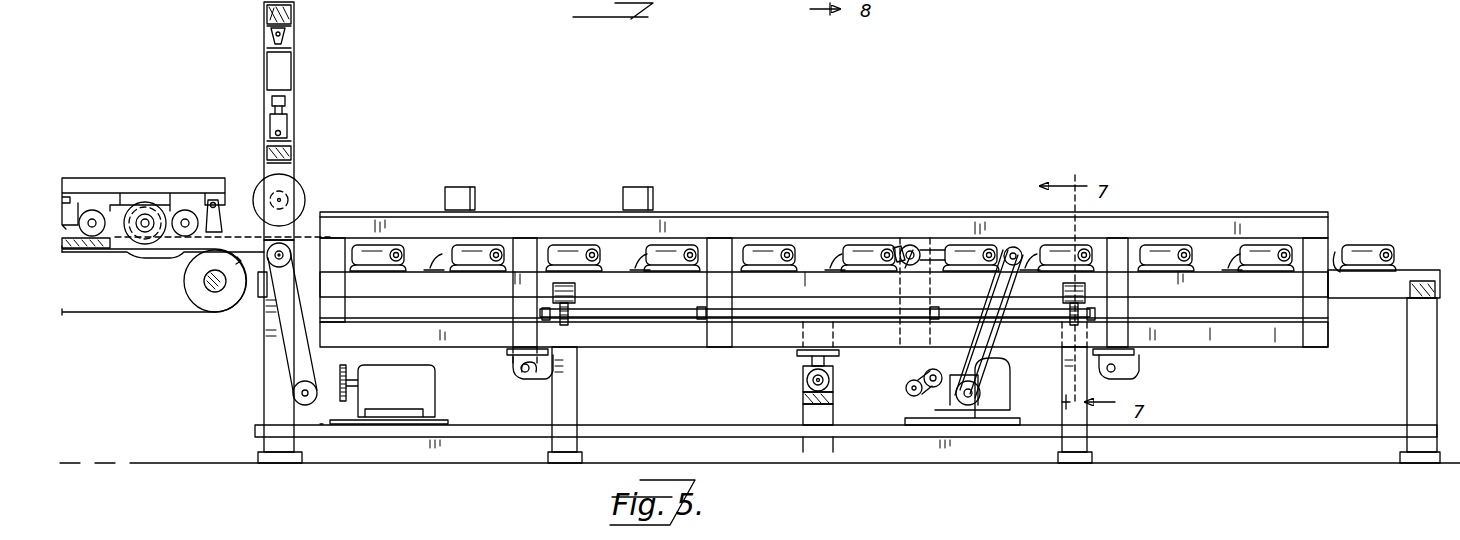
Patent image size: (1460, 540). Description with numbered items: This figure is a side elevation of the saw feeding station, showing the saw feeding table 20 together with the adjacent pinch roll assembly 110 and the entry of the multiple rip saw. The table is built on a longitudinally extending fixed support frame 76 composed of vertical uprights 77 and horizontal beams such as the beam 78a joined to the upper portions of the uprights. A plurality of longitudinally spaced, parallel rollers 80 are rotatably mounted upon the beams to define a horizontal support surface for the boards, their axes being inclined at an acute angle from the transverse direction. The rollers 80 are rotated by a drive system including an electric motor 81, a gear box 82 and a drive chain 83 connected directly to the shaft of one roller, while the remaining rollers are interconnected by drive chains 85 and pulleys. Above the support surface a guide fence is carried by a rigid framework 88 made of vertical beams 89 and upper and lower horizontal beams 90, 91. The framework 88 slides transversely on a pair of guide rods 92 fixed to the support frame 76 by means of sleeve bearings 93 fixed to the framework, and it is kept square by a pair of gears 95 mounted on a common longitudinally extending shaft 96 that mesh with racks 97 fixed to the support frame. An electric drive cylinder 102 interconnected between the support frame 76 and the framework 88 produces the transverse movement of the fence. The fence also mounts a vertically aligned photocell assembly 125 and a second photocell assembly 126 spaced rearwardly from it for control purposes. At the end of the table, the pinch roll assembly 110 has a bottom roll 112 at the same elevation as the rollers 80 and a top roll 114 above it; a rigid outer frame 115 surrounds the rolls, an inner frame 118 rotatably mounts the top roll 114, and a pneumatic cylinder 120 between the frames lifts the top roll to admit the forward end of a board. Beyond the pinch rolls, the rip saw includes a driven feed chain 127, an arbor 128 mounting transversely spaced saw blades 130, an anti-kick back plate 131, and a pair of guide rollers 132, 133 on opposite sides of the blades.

The saw feeding table 20 is at (1409, 240).
The fixed support frame 76 is at (1405, 354).
The vertical uprights 77 is at (264, 378).
The horizontal beam 78a is at (1397, 307).
The rollers 80 is at (380, 247).
The electric motor 81 is at (1005, 392).
The gear box 82 is at (925, 389).
The drive chain 83 is at (958, 342).
The drive chains 85 is at (917, 244).
The rigid framework 88 is at (1277, 212).
The vertical beams 89 is at (1305, 312).
The upper horizontal beam 90 is at (1210, 215).
The lower horizontal beam 91 is at (1260, 347).
The guide rods 92 is at (536, 380).
The sleeve bearings 93 is at (508, 360).
The gears 95 is at (572, 318).
The shaft 96 is at (676, 320).
The racks 97 is at (580, 300).
The electric drive cylinder 102 is at (799, 391).
The pinch roll assembly 110 is at (293, 108).
The bottom roll 112 is at (285, 247).
The top roll 114 is at (290, 187).
The rigid outer frame 115 is at (293, 8).
The inner frame 118 is at (292, 153).
The pneumatic cylinder 120 is at (268, 72).
The photocell assembly 125 is at (458, 187).
The second photocell assembly 126 is at (644, 187).
The driven feed chain 127 is at (134, 317).
The arbor 128 is at (146, 210).
The saw blades 130 is at (143, 248).
The anti-kick back plate 131 is at (220, 218).
The guide roller 132 is at (186, 210).
The guide roller 133 is at (93, 212).